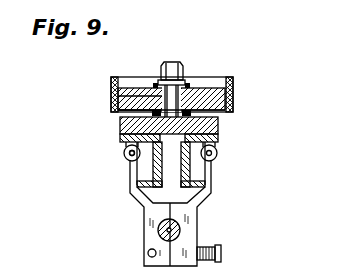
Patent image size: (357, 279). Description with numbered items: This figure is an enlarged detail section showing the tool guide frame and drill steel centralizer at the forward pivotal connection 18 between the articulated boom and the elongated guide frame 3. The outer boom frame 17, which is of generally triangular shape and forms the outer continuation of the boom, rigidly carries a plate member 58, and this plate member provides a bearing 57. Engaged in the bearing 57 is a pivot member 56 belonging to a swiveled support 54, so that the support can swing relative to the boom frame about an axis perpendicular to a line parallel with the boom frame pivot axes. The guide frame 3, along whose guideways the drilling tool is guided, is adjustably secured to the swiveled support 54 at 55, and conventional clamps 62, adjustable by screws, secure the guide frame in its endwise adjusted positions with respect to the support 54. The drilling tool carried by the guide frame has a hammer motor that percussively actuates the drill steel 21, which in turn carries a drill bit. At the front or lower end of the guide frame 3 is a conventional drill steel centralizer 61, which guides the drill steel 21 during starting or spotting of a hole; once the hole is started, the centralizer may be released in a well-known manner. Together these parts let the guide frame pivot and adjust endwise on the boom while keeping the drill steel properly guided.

The guide frame 3 is at (183, 144).
The outer boom frame 17 is at (233, 100).
The forward pivotal connection 18 is at (232, 80).
The drill steel 21 is at (158, 231).
The swiveled support 54 is at (222, 118).
The adjustable securing point 55 is at (125, 152).
The pivot member 56 is at (162, 77).
The bearing 57 is at (124, 95).
The plate member 58 is at (118, 110).
The drill steel centralizer 61 is at (198, 230).
The clamps 62 is at (121, 137).